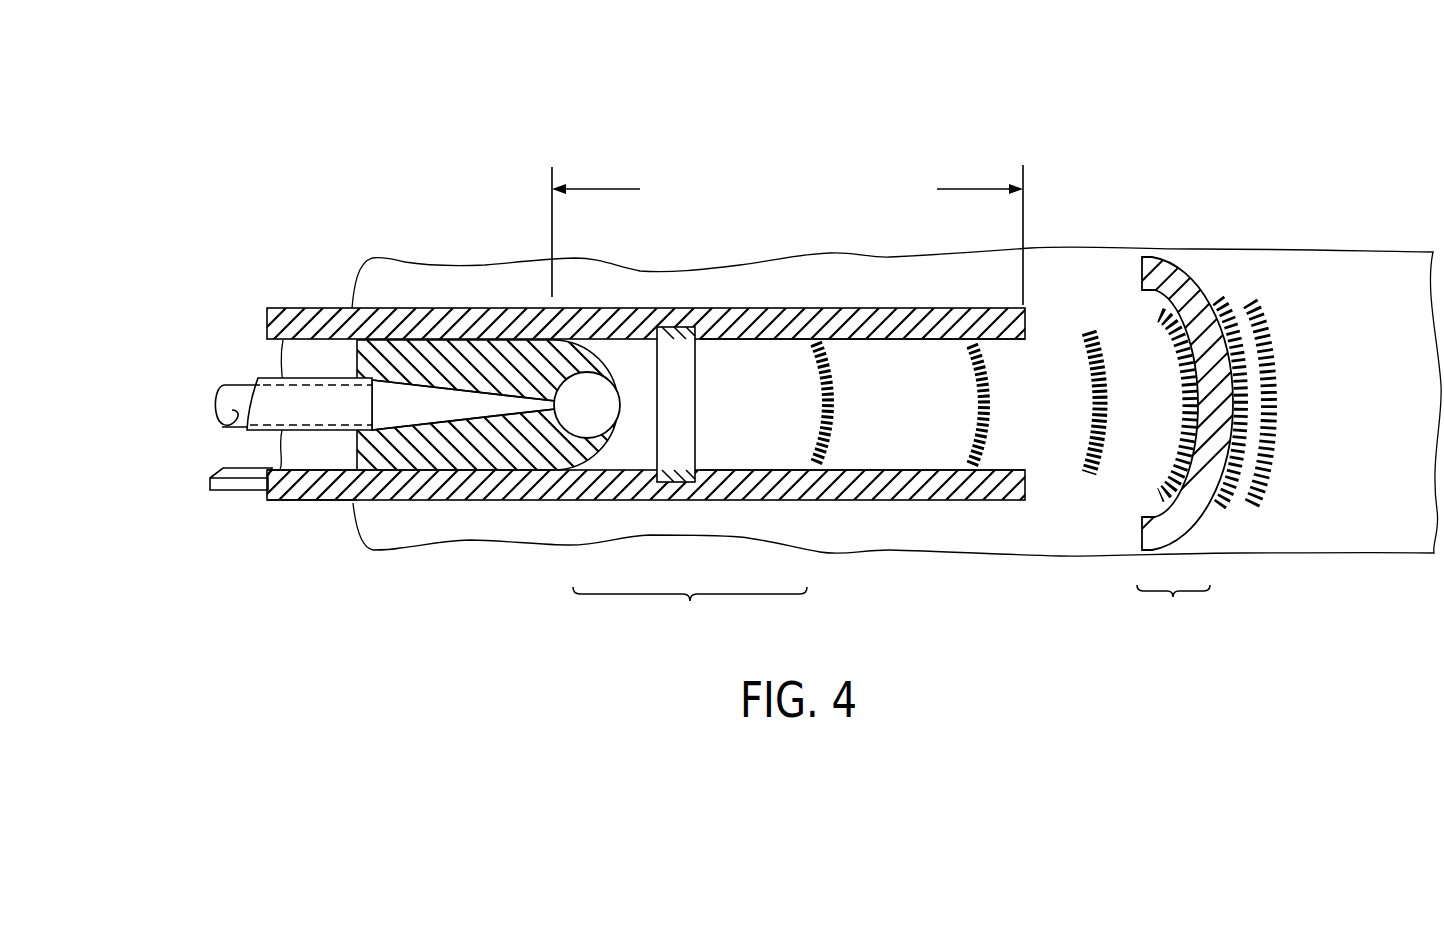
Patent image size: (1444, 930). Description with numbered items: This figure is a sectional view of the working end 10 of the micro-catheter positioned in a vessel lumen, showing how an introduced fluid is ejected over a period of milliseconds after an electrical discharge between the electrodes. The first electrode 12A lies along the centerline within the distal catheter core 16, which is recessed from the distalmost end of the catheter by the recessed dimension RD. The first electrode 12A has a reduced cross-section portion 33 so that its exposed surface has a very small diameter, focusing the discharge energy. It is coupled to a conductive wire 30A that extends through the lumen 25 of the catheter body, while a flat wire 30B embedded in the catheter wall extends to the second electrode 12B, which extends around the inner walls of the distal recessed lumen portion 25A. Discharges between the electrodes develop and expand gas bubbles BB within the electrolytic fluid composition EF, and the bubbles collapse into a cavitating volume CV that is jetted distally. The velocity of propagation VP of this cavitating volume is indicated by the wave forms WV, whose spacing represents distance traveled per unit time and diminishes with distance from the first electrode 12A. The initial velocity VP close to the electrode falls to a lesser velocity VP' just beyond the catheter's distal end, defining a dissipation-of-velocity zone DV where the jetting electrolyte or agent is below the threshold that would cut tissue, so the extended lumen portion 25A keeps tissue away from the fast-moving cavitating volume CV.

The working end 10 is at (466, 136).
The lumen 25 is at (293, 358).
The distal recessed lumen portion 25A is at (753, 350).
The reduced cross-section portion 33 is at (437, 403).
The first electrode 12A is at (525, 405).
The gas bubbles BB is at (583, 372).
The electrolytic fluid composition EF is at (608, 455).
The second electrode 12B is at (674, 486).
The distal catheter core 16 is at (333, 502).
The conductive wire 30A is at (222, 427).
The flat wire 30B is at (228, 493).
The recessed dimension RD is at (958, 188).
The wave forms WV is at (1092, 437).
The cavitating volume CV is at (1053, 365).
The dissipation-of-velocity zone DV is at (1193, 287).
The velocity of propagation VP is at (690, 615).
The diminished velocity of propagation VP' is at (1173, 613).